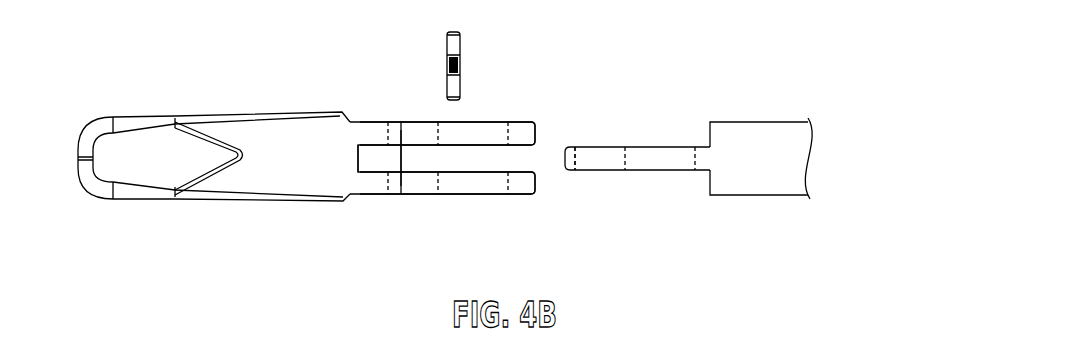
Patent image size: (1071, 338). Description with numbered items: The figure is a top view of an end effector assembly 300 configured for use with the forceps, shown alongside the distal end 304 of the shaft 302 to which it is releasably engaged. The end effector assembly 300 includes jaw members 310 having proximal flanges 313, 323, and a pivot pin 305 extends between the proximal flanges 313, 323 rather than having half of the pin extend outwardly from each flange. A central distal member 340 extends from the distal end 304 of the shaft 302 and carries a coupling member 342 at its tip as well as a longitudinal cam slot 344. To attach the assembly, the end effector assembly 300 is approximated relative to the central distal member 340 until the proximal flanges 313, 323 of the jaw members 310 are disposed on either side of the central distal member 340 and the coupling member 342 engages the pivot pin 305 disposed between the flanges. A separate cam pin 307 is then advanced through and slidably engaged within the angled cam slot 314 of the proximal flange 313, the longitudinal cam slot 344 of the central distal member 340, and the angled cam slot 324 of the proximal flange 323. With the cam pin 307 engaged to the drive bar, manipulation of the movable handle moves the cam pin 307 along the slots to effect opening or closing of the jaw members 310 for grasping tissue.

The end effector assembly 300 is at (312, 139).
The jaw members 310 is at (142, 92).
The proximal flange 313 is at (368, 122).
The angled cam slot 314 is at (490, 132).
The angled cam slot 324 is at (490, 188).
The proximal flange 323 is at (367, 195).
The pivot pin 305 is at (401, 158).
The cam pin 307 is at (462, 50).
The central distal member 340 is at (711, 162).
The coupling member 342 is at (575, 147).
The longitudinal cam slot 344 is at (640, 163).
The distal end 304 is at (752, 182).
The shaft 302 is at (778, 122).